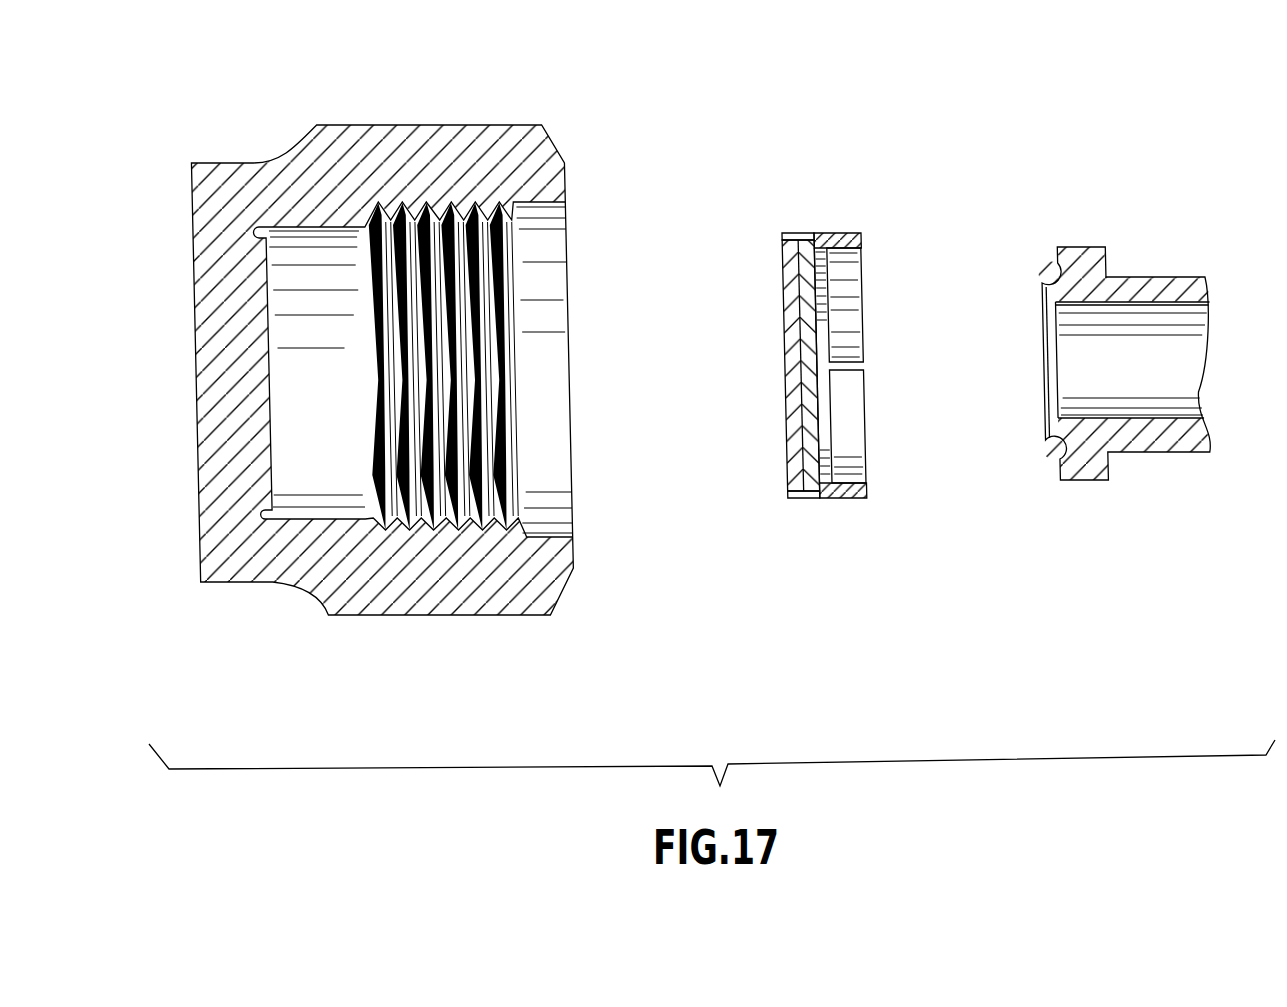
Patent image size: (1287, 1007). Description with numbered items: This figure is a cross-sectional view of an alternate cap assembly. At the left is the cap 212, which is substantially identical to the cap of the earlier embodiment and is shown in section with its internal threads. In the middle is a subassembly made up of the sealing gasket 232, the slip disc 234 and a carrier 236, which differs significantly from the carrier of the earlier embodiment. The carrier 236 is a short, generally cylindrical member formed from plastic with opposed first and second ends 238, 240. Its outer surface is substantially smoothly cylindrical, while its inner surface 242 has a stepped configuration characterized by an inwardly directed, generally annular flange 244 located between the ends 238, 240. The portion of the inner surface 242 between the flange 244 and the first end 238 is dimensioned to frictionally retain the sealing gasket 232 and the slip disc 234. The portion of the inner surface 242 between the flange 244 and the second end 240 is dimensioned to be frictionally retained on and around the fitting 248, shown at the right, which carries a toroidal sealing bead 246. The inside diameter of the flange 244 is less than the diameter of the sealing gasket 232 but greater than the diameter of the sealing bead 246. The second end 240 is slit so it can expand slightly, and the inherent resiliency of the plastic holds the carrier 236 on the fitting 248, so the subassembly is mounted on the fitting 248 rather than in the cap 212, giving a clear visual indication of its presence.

The cap 212 is at (372, 124).
The carrier 236 is at (789, 210).
The first end 238 is at (780, 237).
The slip disc 234 is at (781, 353).
The inner surface 242 is at (804, 472).
The second end 240 is at (861, 240).
The flange 244 is at (833, 457).
The sealing gasket 232 is at (830, 332).
The fitting 248 is at (1178, 270).
The toroidal sealing bead 246 is at (1040, 271).